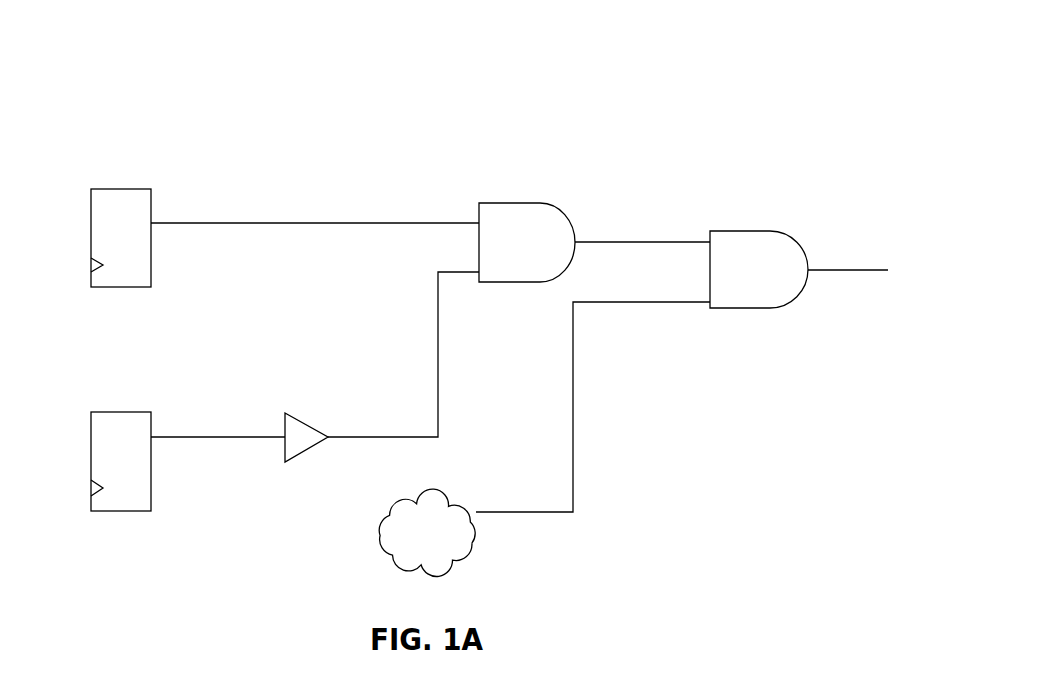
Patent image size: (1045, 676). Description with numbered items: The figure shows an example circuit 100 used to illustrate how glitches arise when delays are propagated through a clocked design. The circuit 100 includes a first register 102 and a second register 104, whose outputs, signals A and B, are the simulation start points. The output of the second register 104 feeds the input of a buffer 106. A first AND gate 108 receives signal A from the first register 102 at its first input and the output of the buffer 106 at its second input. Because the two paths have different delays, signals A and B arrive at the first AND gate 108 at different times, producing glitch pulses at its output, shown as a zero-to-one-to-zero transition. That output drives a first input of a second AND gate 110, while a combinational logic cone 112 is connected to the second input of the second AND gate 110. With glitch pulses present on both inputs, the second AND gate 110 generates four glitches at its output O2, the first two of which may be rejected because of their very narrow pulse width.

The circuit 100 is at (116, 91).
The first register 102 is at (125, 188).
The second register 104 is at (100, 412).
The buffer 106 is at (293, 418).
The first AND gate 108 is at (500, 200).
The second AND gate 110 is at (750, 235).
The combinational logic cone 112 is at (475, 548).